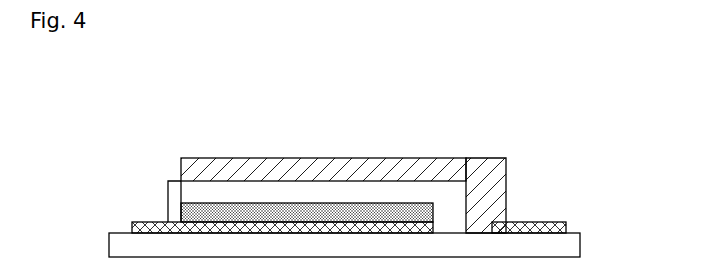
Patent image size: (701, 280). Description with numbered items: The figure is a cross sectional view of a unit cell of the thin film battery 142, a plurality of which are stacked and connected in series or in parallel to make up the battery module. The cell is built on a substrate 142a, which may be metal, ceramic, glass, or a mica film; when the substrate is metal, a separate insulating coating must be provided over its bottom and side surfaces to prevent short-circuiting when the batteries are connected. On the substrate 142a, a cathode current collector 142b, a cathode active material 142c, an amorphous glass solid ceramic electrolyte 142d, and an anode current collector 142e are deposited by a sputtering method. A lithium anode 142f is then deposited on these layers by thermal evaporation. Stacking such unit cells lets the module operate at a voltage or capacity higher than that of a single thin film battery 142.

The thin film battery 142 is at (362, 137).
The substrate 142a is at (115, 247).
The cathode current collector 142b is at (132, 227).
The cathode active material 142c is at (183, 211).
The amorphous glass solid ceramic electrolyte 142d is at (186, 186).
The anode current collector 142e is at (560, 223).
The lithium anode 142f is at (493, 170).